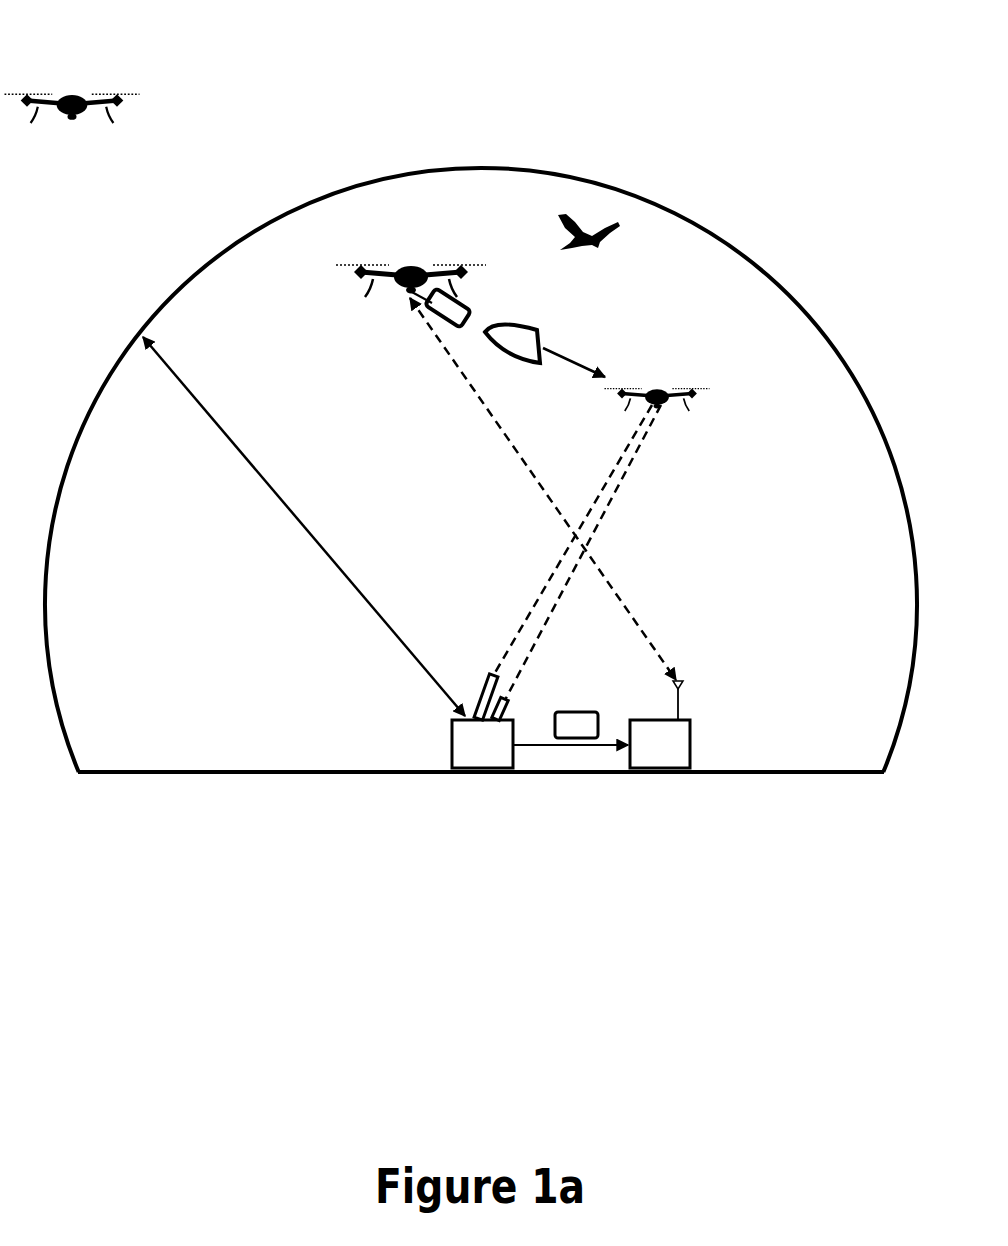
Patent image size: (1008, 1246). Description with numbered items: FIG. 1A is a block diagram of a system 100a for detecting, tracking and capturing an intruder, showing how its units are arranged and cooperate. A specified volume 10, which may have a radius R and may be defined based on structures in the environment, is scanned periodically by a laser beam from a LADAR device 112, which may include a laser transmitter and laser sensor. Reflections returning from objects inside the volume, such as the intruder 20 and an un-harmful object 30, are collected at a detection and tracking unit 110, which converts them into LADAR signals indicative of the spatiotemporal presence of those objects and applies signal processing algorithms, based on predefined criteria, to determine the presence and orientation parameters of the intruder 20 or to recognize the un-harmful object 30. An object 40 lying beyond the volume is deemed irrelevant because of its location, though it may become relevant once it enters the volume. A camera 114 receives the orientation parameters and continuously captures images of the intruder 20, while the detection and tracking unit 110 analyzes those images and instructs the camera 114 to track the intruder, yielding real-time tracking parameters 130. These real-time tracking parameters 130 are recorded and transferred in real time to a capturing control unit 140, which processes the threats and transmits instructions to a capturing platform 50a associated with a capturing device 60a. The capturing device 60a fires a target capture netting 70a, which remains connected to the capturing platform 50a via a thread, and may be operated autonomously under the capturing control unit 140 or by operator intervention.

The system 100a is at (377, 47).
The specified volume 10 is at (230, 247).
The intruder 20 is at (688, 398).
The un-harmful object 30 is at (558, 222).
The object 40 is at (76, 95).
The capturing platform 50a is at (352, 277).
The capturing device 60a is at (432, 318).
The target capture netting 70a is at (520, 352).
The detection and tracking unit 110 is at (452, 758).
The LADAR device 112 is at (477, 698).
The camera 114 is at (512, 715).
The real-time tracking parameters 130 is at (597, 713).
The capturing control unit 140 is at (692, 745).